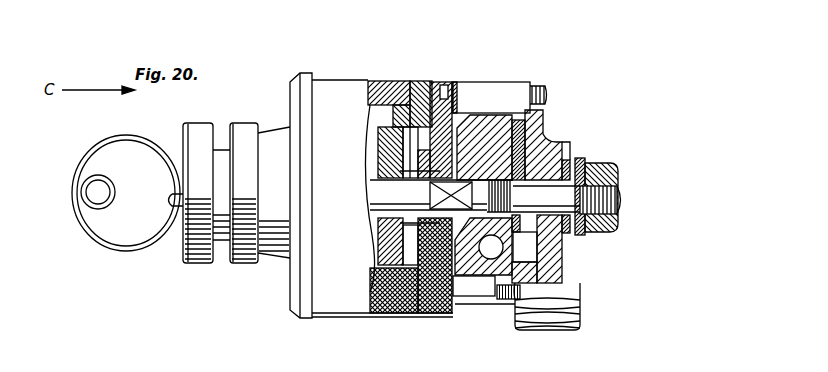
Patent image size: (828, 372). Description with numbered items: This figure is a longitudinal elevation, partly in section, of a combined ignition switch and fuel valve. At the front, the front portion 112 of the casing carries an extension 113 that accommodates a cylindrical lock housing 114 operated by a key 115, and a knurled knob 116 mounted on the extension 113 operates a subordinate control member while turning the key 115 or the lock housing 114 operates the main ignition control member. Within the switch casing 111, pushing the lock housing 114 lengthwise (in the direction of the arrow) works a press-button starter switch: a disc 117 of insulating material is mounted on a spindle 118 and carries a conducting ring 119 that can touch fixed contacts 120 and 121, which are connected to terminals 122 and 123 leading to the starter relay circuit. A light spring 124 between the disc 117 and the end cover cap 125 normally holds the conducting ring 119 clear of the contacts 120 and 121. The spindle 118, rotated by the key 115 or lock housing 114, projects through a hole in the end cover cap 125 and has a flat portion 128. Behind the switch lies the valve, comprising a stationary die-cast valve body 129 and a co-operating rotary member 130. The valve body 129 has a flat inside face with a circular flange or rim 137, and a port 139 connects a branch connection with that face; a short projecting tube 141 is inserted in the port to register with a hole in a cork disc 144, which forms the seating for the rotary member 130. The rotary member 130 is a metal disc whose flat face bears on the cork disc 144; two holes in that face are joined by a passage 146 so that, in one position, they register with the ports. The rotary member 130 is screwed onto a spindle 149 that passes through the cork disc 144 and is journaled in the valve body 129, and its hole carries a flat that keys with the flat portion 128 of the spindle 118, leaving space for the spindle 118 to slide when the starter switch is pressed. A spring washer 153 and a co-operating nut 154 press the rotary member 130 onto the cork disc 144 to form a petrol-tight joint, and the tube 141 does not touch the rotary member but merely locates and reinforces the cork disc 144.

The switch casing 111 is at (333, 118).
The front portion of the casing 112 is at (293, 273).
The extension 113 is at (276, 157).
The cylindrical lock housing 114 is at (223, 227).
The key 115 is at (120, 233).
The knurled knob 116 is at (240, 137).
The disc of insulating material 117 is at (373, 248).
The spindle 118 is at (390, 197).
The conducting ring 119 is at (390, 84).
The fixed contact 120 is at (436, 80).
The fixed contact 121 is at (398, 312).
The terminal 122 is at (462, 92).
The terminal 123 is at (467, 304).
The light spring 124 is at (433, 70).
The end cover cap 125 is at (466, 100).
The flat portion 128 is at (448, 190).
The stationary valve body 129 is at (545, 160).
The rotary member 130 is at (510, 110).
The circular flange or rim 137 is at (492, 300).
The port 139 is at (540, 248).
The projecting tube 141 is at (548, 255).
The cork disc 144 is at (523, 130).
The passage 146 is at (490, 248).
The spindle 149 is at (563, 200).
The spring washer 153 is at (572, 237).
The nut 154 is at (608, 230).